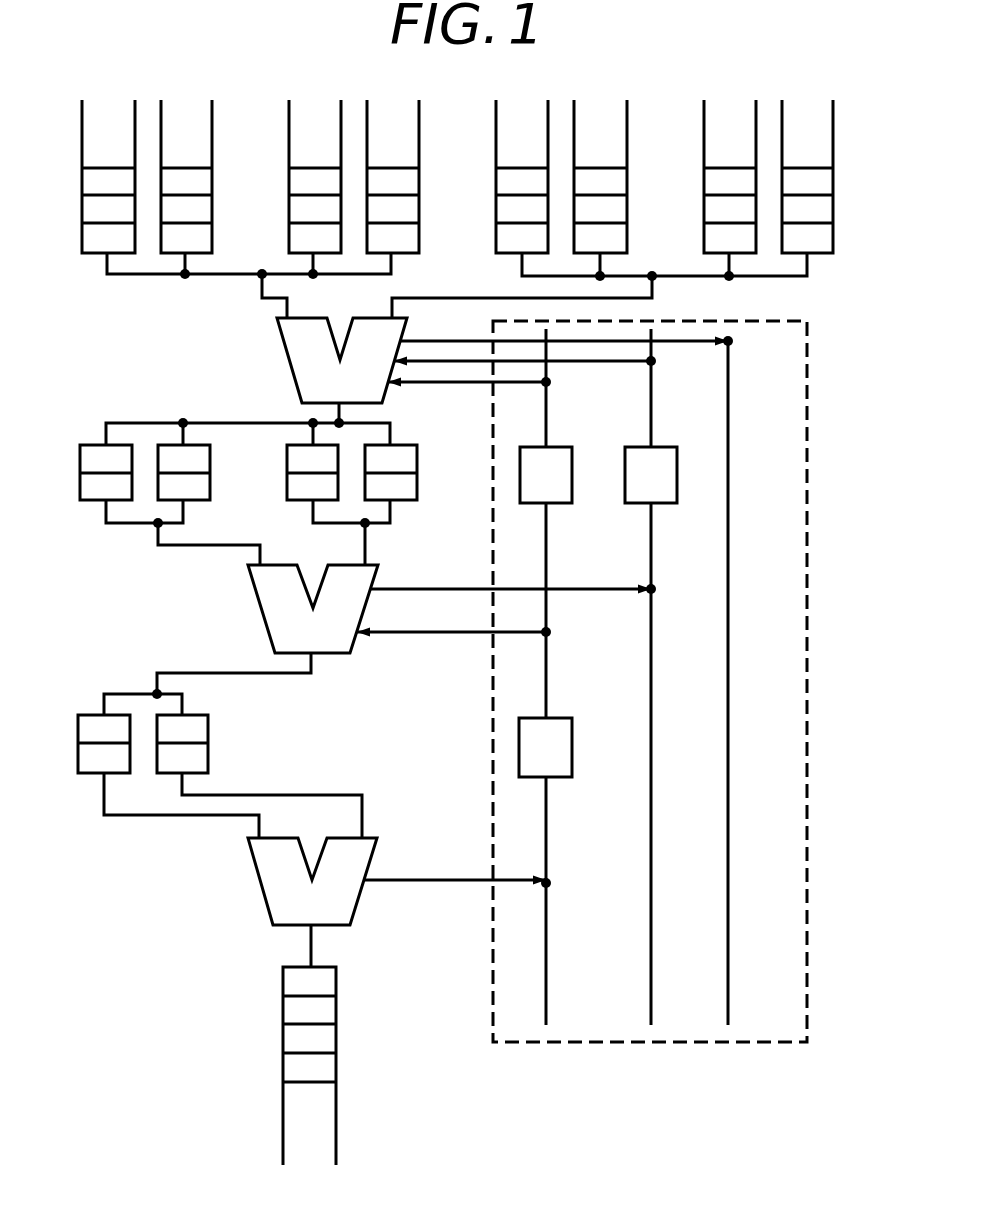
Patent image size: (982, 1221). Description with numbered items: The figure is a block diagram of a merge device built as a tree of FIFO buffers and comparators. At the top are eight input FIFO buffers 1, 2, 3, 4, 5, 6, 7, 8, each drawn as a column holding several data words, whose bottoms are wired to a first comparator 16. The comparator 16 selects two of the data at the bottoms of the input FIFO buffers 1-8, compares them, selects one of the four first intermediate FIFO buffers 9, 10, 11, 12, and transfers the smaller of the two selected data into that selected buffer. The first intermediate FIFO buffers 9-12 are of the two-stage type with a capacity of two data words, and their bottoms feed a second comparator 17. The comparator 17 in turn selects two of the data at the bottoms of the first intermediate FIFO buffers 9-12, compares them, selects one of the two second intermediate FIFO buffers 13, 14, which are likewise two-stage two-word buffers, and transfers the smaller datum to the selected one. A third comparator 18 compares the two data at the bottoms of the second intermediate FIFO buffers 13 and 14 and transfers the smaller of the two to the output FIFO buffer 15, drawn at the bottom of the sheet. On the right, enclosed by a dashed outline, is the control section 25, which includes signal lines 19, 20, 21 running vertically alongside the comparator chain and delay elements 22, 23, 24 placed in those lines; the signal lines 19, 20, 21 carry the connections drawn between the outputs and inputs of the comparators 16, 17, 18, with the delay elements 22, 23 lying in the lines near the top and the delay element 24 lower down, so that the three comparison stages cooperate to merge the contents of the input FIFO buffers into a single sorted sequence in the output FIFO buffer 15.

The input FIFO buffer 1 is at (82, 141).
The input FIFO buffer 2 is at (212, 141).
The input FIFO buffer 3 is at (289, 128).
The input FIFO buffer 4 is at (419, 132).
The input FIFO buffer 5 is at (496, 145).
The input FIFO buffer 6 is at (627, 145).
The input FIFO buffer 7 is at (704, 130).
The input FIFO buffer 8 is at (833, 135).
The first intermediate FIFO buffer 9 is at (80, 448).
The first intermediate FIFO buffer 10 is at (210, 450).
The first intermediate FIFO buffer 11 is at (287, 452).
The first intermediate FIFO buffer 12 is at (417, 453).
The second intermediate FIFO buffer 13 is at (78, 725).
The second intermediate FIFO buffer 14 is at (208, 725).
The output FIFO buffer 15 is at (336, 980).
The comparator 16 is at (277, 332).
The comparator 17 is at (248, 575).
The comparator 18 is at (248, 845).
The signal line 19 is at (728, 986).
The signal line 20 is at (651, 1000).
The signal line 21 is at (546, 986).
The delay element 22 is at (572, 455).
The delay element 23 is at (677, 455).
The delay element 24 is at (572, 727).
The control section 25 is at (807, 333).